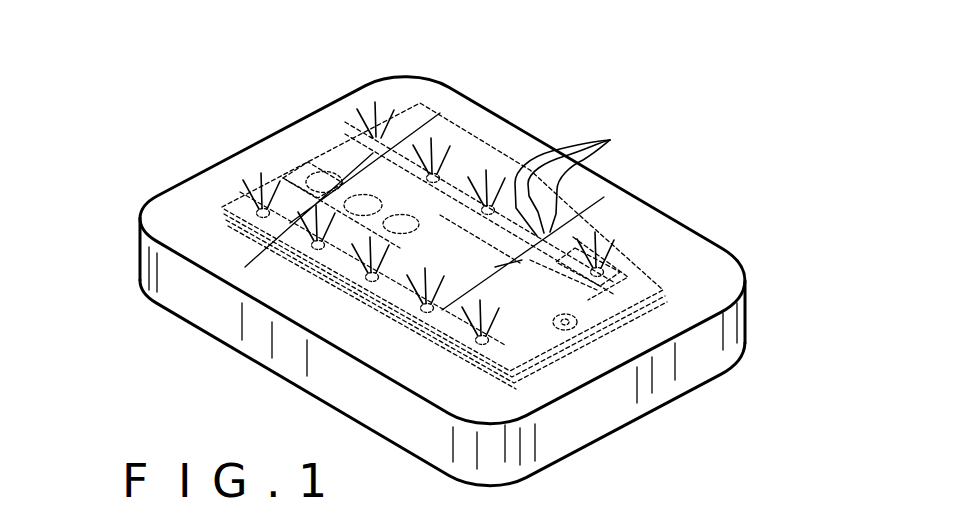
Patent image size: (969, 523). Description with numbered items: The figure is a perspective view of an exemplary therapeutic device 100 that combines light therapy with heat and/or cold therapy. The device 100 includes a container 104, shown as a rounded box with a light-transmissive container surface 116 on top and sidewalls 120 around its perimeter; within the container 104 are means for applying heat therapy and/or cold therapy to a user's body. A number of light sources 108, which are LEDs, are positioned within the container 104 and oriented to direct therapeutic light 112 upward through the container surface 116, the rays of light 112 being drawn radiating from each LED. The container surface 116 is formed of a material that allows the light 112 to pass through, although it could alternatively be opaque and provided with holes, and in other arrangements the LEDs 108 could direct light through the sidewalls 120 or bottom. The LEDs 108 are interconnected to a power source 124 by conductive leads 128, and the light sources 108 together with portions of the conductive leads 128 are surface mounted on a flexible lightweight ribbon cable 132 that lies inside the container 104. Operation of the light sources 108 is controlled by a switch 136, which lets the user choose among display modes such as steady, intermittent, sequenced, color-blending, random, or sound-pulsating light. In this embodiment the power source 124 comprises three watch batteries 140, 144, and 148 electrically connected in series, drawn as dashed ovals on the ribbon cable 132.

The therapeutic device 100 is at (170, 88).
The container 104 is at (183, 290).
The light sources 108 is at (240, 210).
The therapeutic light 112 is at (449, 223).
The container surface 116 is at (457, 120).
The sidewalls 120 is at (566, 430).
The power source 124 is at (397, 197).
The conductive leads 128 is at (314, 170).
The ribbon cable 132 is at (353, 288).
The switch 136 is at (583, 318).
The watch battery 140 is at (333, 177).
The watch battery 144 is at (361, 194).
The watch battery 148 is at (457, 163).